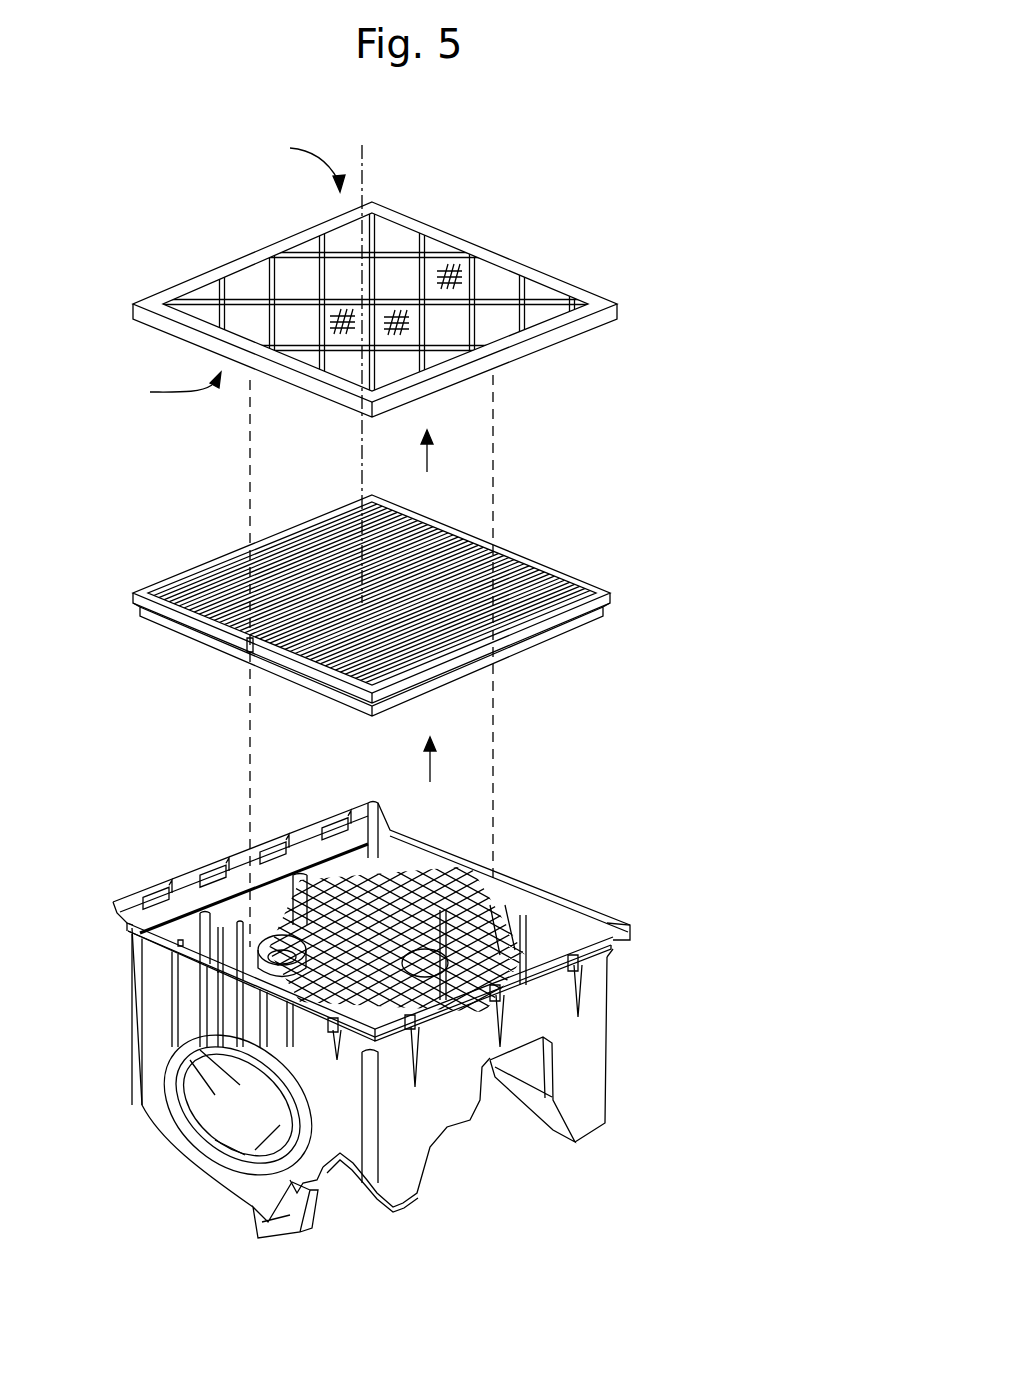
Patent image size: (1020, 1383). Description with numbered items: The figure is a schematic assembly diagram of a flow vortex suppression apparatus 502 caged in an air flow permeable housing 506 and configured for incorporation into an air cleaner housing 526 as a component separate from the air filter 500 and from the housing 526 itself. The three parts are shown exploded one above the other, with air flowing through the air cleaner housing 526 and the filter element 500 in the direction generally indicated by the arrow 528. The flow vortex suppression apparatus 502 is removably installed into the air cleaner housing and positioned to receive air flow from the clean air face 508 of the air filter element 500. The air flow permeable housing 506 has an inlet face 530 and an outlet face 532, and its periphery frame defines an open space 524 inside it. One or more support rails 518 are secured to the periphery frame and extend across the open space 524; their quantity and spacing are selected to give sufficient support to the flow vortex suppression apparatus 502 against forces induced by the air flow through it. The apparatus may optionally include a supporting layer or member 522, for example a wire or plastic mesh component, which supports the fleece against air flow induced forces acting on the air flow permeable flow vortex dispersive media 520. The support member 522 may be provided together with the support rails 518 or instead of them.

The air filter 500 is at (688, 607).
The flow vortex suppression apparatus 502 is at (618, 176).
The air flow permeable housing 506 is at (558, 336).
The clean air face 508 is at (478, 585).
The support rails 518 is at (372, 238).
The air flow permeable flow vortex dispersive media 520 is at (440, 325).
The support member 522 is at (597, 300).
The open space 524 is at (300, 280).
The air cleaner housing 526 is at (710, 961).
The arrow 528 is at (427, 455).
The inlet face 530 is at (155, 391).
The outlet face 532 is at (290, 157).